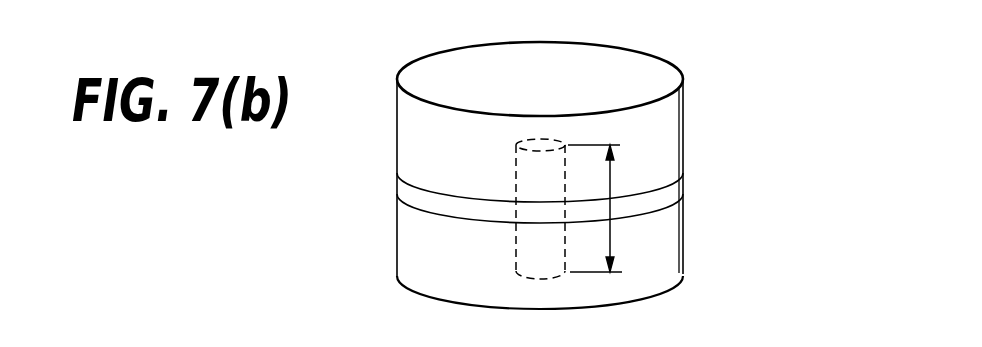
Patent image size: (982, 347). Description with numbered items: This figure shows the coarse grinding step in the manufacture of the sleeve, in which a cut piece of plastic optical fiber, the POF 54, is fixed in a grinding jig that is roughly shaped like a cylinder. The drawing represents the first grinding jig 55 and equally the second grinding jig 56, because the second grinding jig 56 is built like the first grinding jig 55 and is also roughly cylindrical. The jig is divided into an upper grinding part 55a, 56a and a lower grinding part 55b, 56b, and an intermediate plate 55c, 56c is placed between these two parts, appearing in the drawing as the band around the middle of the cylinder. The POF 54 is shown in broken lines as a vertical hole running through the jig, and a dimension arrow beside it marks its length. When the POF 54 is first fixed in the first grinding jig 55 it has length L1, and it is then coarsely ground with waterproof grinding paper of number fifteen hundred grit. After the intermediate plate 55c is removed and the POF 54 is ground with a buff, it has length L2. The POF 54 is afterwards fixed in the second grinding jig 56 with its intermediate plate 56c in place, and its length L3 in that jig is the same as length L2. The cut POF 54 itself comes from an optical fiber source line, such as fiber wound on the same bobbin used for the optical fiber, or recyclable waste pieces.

The first grinding jig 55 is at (533, 161).
The second grinding jig 56 is at (533, 161).
The upper grinding part 55a is at (622, 107).
The upper grinding part 56a is at (673, 120).
The lower grinding part 55b is at (617, 251).
The lower grinding part 56b is at (675, 247).
The intermediate plate 55c is at (451, 206).
The intermediate plate 56c is at (412, 195).
The POF 54 is at (515, 163).
The length of the POF L1 is at (706, 208).
The length of the POF L2 is at (683, 205).
The length of the POF L3 is at (706, 208).